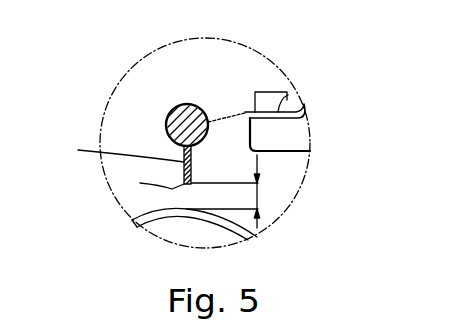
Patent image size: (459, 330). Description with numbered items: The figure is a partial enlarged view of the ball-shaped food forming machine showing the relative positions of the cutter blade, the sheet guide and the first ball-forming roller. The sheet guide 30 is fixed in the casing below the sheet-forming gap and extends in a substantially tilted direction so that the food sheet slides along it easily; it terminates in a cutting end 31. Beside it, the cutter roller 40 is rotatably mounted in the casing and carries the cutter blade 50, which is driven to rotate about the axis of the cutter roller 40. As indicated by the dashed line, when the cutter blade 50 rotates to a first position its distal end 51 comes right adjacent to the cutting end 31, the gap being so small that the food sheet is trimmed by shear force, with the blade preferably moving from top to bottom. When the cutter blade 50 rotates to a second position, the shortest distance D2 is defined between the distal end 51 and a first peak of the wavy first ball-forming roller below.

The sheet guide 30 is at (288, 95).
The cutting end 31 is at (242, 110).
The cutter roller 40 is at (185, 125).
The cutter blade 50 is at (223, 120).
The distal end 51 is at (140, 183).
The shortest distance D2 is at (258, 192).